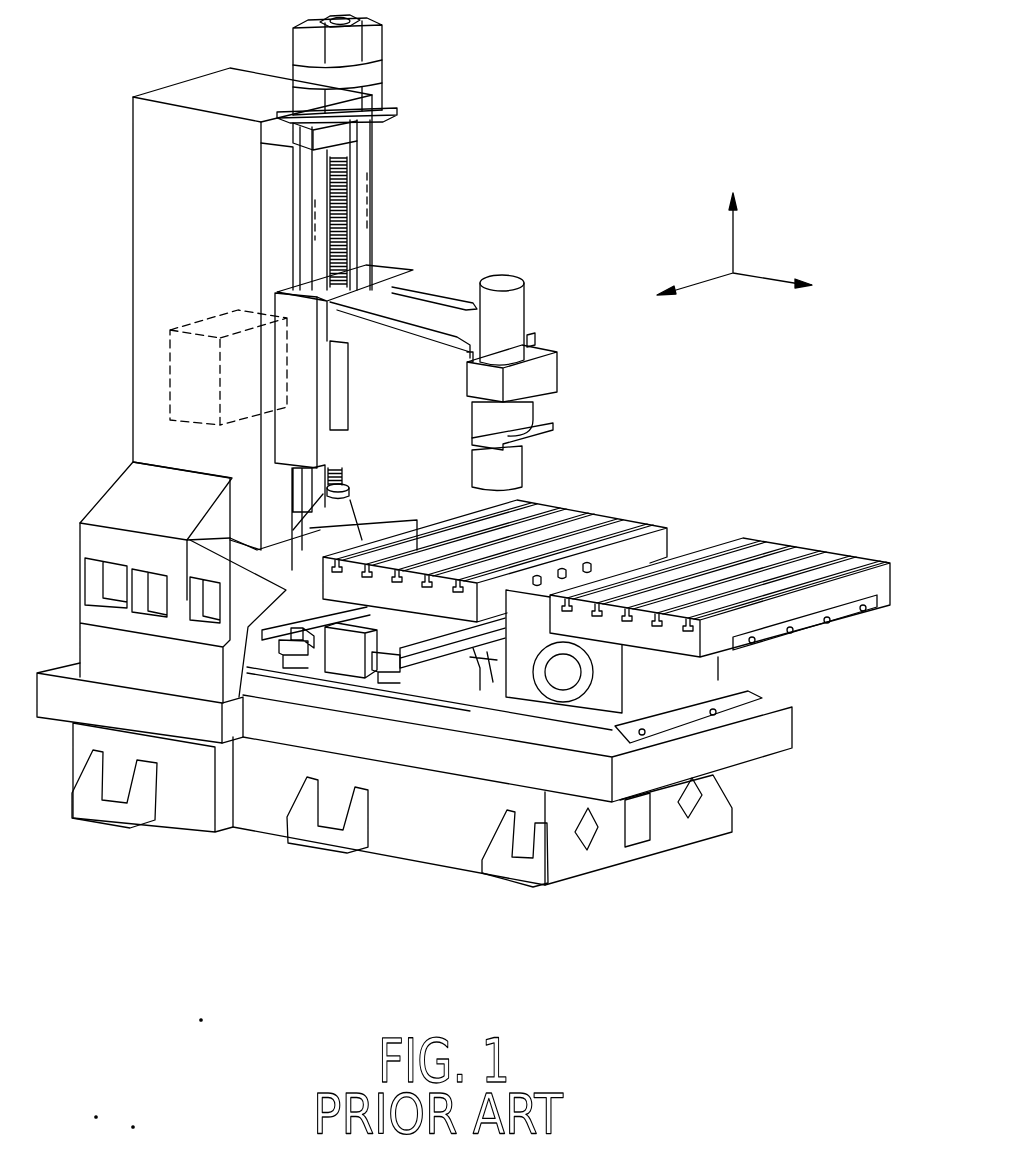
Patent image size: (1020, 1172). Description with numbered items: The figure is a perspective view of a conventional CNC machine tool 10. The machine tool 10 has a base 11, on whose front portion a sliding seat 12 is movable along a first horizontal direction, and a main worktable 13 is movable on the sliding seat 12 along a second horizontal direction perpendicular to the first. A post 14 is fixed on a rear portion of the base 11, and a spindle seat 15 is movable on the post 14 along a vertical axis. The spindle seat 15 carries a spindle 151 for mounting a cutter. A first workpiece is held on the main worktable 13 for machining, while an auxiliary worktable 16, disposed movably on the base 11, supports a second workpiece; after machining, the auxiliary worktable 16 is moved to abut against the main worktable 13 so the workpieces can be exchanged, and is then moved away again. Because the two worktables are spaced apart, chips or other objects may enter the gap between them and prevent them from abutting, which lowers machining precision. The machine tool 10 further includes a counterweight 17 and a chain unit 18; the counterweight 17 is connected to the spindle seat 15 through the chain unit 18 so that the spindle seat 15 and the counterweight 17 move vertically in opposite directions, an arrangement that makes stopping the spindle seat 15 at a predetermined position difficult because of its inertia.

The CNC machine tool 10 is at (803, 723).
The base 11 is at (438, 845).
The sliding seat 12 is at (473, 670).
The main worktable 13 is at (662, 547).
The post 14 is at (145, 368).
The spindle seat 15 is at (542, 375).
The spindle 151 is at (513, 465).
The auxiliary worktable 16 is at (767, 540).
The counterweight 17 is at (187, 322).
The chain unit 18 is at (370, 171).